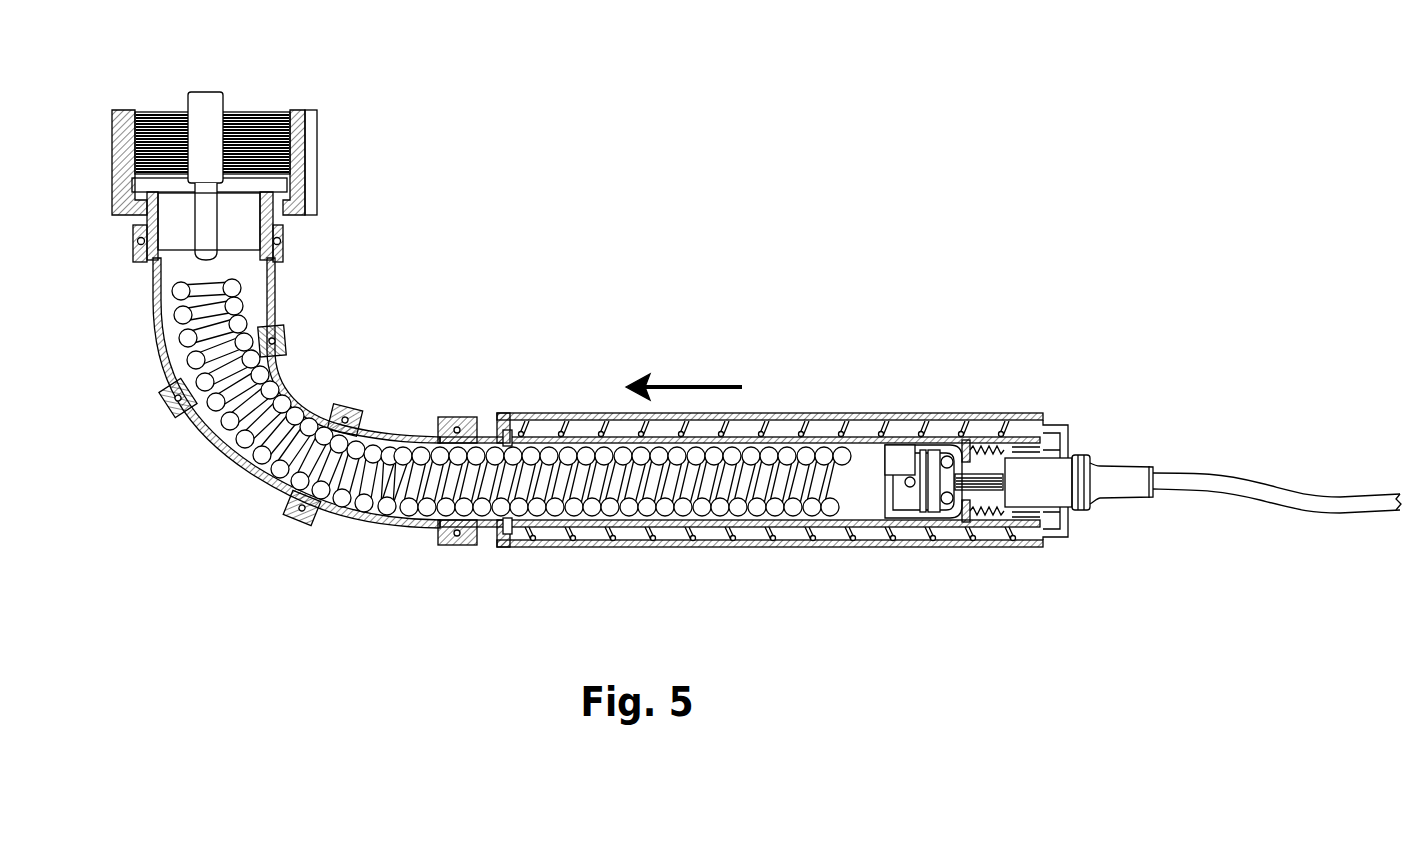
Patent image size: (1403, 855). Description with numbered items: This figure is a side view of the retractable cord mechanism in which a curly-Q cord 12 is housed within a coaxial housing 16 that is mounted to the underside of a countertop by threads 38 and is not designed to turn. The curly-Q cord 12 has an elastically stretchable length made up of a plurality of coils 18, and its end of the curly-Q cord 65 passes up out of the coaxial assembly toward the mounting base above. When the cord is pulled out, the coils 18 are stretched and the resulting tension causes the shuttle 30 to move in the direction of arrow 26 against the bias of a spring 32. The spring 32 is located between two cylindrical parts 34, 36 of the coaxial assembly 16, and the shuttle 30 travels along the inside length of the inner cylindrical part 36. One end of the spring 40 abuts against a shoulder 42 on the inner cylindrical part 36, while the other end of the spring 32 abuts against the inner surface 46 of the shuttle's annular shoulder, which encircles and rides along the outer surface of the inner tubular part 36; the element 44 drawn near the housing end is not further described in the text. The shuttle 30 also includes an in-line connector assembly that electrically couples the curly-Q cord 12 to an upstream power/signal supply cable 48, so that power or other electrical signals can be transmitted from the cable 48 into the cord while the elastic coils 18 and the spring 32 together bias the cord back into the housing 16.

The curly-Q cord 12 is at (222, 221).
The coaxial housing 16 is at (583, 412).
The coils 18 is at (237, 460).
The arrow 26 is at (702, 384).
The shuttle 30 is at (925, 526).
The spring 32 is at (788, 419).
The outer cylindrical part 34 is at (905, 419).
The inner cylindrical part 36 is at (690, 549).
The threads 38 is at (250, 108).
The end of the spring 40 is at (545, 548).
The shoulder 42 is at (483, 416).
The spring retainer 44 is at (975, 419).
The inner surface 46 is at (1027, 418).
The power/signal supply cable 48 is at (1242, 474).
The end of the curly-Q cord 65 is at (190, 102).